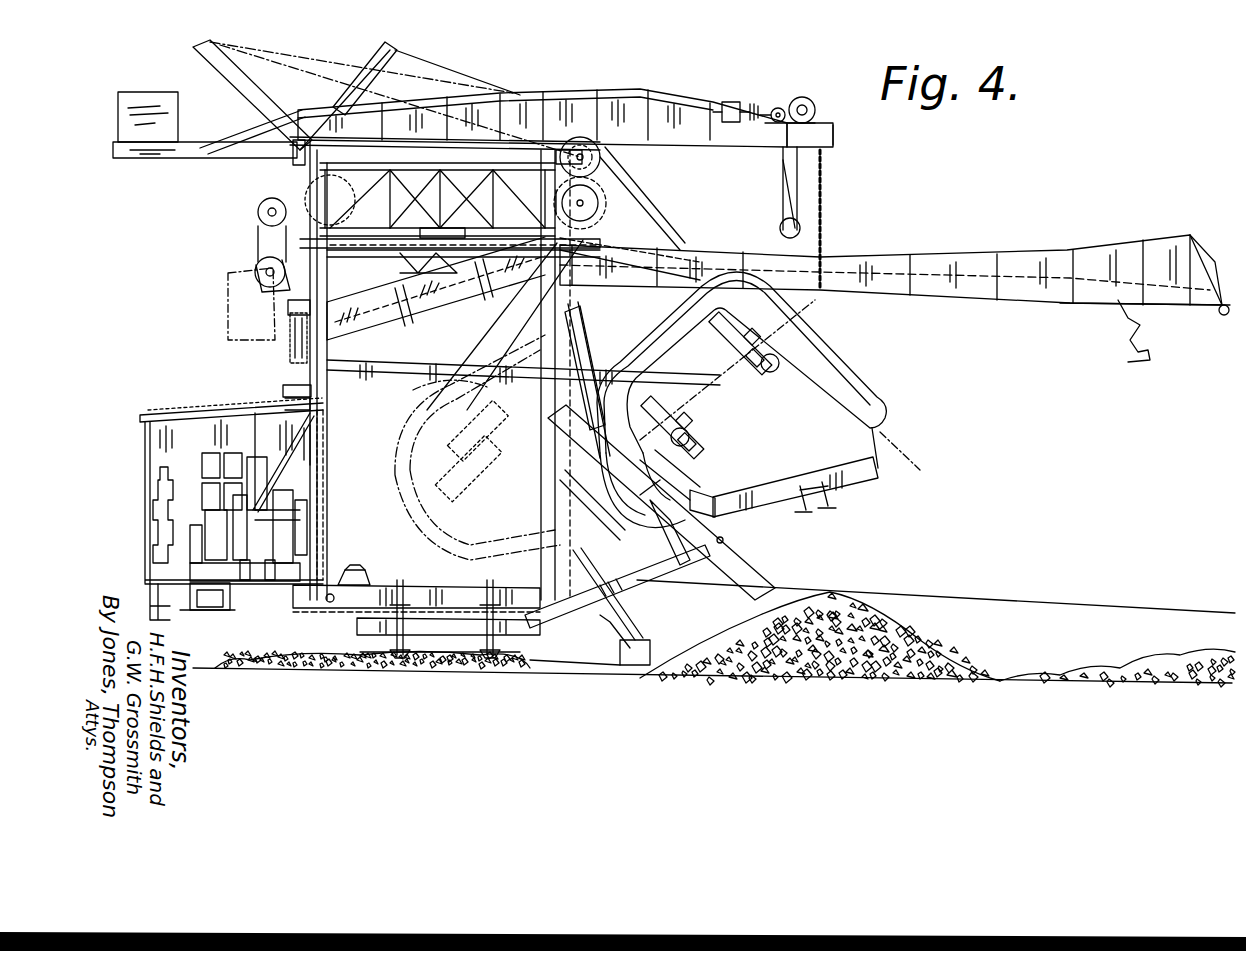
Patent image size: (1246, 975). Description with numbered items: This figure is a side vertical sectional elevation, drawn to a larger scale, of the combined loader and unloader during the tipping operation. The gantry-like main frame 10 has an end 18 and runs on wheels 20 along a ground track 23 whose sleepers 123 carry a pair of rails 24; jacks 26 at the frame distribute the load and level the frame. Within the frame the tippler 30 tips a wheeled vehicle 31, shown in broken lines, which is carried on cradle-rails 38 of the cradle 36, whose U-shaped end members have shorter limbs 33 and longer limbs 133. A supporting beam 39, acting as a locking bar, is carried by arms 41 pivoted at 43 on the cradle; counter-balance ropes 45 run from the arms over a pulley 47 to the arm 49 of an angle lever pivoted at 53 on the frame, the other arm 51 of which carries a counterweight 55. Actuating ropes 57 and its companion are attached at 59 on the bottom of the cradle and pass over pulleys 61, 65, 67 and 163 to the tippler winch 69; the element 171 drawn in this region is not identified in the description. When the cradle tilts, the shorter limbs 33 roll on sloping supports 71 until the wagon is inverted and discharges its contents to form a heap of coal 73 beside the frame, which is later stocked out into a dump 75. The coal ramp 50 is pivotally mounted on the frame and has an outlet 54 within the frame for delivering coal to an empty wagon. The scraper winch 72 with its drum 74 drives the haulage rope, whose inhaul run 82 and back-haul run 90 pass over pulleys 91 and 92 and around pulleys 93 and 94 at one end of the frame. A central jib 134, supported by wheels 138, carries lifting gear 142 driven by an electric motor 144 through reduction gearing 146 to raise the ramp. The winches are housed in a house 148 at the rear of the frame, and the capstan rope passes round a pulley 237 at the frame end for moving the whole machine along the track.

The main frame 10 is at (294, 651).
The end 18 is at (162, 598).
The wheels 20 is at (430, 662).
The ground track 23 is at (486, 662).
The rails 24 is at (392, 660).
The jacks 26 is at (185, 612).
The tippler 30 is at (842, 341).
The wheeled vehicle 31 is at (445, 382).
The shorter limbs 33 is at (660, 452).
The cradle 36 is at (710, 270).
The cradle-rails 38 is at (440, 550).
The supporting beam 39 is at (828, 503).
The arms 41 is at (765, 475).
The pivot 43 is at (612, 522).
The counter-balance ropes 45 is at (655, 203).
The pulley 47 is at (604, 155).
The arm of angle lever 49 is at (210, 70).
The coal ramp 50 is at (870, 255).
The arm of angle lever 51 is at (160, 160).
The pivot 53 is at (290, 165).
The outlet 54 is at (436, 326).
The counterweight 55 is at (145, 90).
The actuating rope 57 is at (631, 372).
The rope attachment point 59 is at (629, 368).
The pulley 61 is at (630, 244).
The pulley 65 is at (300, 350).
The pulley 67 is at (286, 391).
The tippler winch 69 is at (300, 512).
The sloping supports 71 is at (655, 570).
The scraper winch 72 is at (250, 578).
The heap of coal 73 is at (905, 632).
The drum 74 is at (275, 580).
The dump 75 is at (1212, 650).
The inhaul run 82 is at (1226, 300).
The back-haul run 90 is at (928, 592).
The pulley 91 is at (278, 236).
The pulley 92 is at (317, 345).
The pulley 93 is at (301, 616).
The pulley 94 is at (560, 615).
The sleepers 123 is at (520, 665).
The longer limbs 133 is at (500, 330).
The central jib 134 is at (622, 92).
The wheels 138 is at (556, 160).
The lifting gear 142 is at (825, 195).
The electric motor 144 is at (733, 100).
The reduction gearing 146 is at (781, 108).
The house 148 is at (190, 432).
The pulley 163 is at (262, 208).
The chute 171 is at (748, 566).
The pulley 237 is at (390, 555).